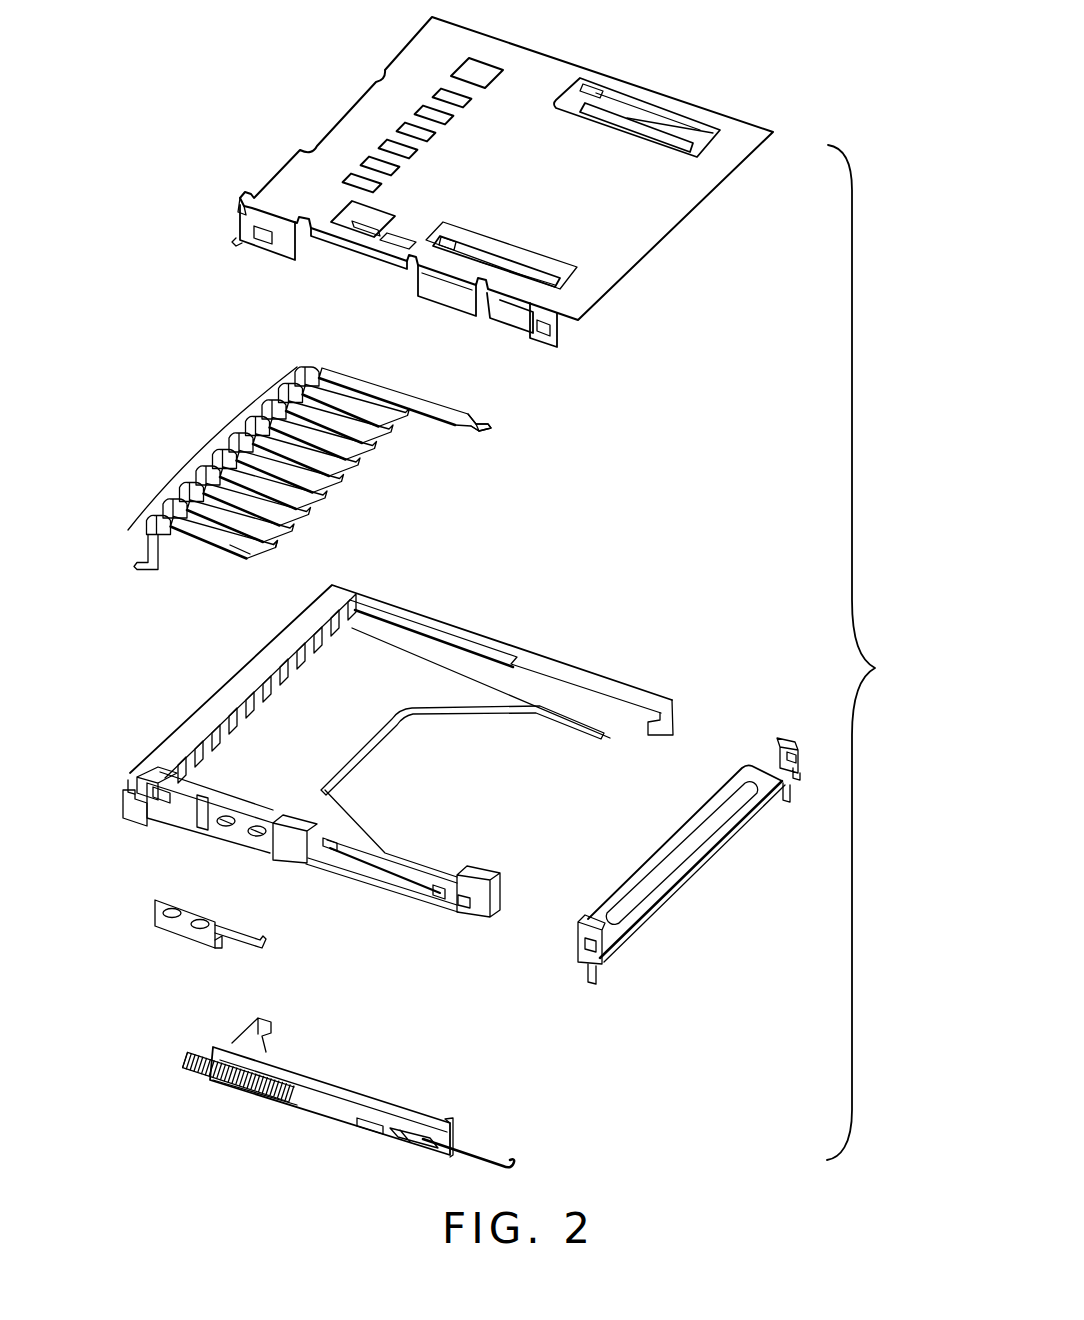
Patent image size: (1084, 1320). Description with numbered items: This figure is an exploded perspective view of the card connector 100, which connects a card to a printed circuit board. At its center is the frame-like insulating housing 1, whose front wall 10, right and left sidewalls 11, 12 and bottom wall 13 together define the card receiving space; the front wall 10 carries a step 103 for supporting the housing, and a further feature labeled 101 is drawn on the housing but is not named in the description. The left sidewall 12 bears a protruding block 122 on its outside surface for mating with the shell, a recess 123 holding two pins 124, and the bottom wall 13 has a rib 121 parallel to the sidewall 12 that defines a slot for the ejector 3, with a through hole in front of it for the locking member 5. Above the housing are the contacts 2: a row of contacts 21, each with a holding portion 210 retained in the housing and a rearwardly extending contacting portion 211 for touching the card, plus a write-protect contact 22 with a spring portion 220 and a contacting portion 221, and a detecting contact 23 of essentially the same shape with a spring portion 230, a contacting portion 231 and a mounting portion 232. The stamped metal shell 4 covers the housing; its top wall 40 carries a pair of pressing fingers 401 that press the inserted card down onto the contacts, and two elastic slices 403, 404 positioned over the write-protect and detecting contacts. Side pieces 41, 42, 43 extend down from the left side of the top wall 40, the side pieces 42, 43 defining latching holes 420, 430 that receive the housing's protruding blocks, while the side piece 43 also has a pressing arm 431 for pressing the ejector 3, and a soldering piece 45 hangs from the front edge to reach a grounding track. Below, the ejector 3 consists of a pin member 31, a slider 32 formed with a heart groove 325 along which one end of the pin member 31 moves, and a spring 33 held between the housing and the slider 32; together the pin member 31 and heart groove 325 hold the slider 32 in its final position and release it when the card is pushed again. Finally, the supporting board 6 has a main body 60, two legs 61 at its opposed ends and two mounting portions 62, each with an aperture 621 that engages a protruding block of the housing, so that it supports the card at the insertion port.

The card connector 100 is at (881, 652).
The insulating housing 1 is at (197, 685).
The front wall 10 is at (197, 732).
The groove 101 is at (407, 643).
The step 103 is at (127, 812).
The right sidewall 11 is at (510, 652).
The left sidewall 12 is at (287, 848).
The rib 121 is at (360, 857).
The protruding block 122 is at (135, 790).
The recess 123 is at (256, 838).
The pins 124 is at (222, 828).
The bottom wall 13 is at (368, 725).
The contacts 2 is at (212, 400).
The contacts 21 is at (215, 445).
The holding portion 210 is at (266, 445).
The contacting portion 211 is at (335, 492).
The write-protect contact 22 is at (393, 388).
The spring portion 220 is at (476, 430).
The contacting portion 221 is at (495, 428).
The detecting contact 23 is at (178, 530).
The spring portion 230 is at (250, 556).
The contacting portion 231 is at (258, 556).
The mounting portion 232 is at (138, 565).
The ejector 3 is at (205, 1028).
The pin member 31 is at (463, 1145).
The slider 32 is at (328, 1112).
The heart groove 325 is at (413, 1135).
The spring 33 is at (200, 1065).
The shell 4 is at (318, 100).
The top wall 40 is at (526, 72).
The pressing fingers 401 is at (518, 262).
The elastic slice 403 is at (356, 232).
The elastic slice 404 is at (593, 80).
The side piece 41 is at (430, 288).
The side piece 42 is at (285, 246).
The latching hole 420 is at (257, 243).
The side piece 43 is at (560, 342).
The latching hole 430 is at (560, 314).
The pressing arm 431 is at (490, 312).
The soldering piece 45 is at (243, 195).
The locking member 5 is at (140, 900).
The supporting board 6 is at (595, 843).
The main body 60 is at (668, 847).
The legs 61 is at (790, 800).
The mounting portions 62 is at (792, 738).
The aperture 621 is at (780, 757).